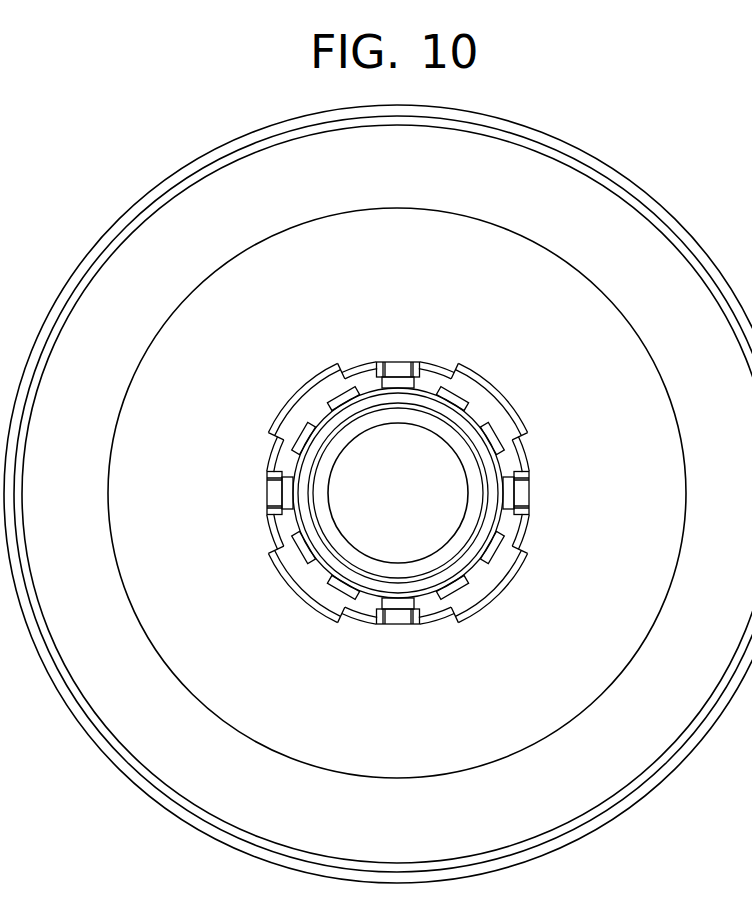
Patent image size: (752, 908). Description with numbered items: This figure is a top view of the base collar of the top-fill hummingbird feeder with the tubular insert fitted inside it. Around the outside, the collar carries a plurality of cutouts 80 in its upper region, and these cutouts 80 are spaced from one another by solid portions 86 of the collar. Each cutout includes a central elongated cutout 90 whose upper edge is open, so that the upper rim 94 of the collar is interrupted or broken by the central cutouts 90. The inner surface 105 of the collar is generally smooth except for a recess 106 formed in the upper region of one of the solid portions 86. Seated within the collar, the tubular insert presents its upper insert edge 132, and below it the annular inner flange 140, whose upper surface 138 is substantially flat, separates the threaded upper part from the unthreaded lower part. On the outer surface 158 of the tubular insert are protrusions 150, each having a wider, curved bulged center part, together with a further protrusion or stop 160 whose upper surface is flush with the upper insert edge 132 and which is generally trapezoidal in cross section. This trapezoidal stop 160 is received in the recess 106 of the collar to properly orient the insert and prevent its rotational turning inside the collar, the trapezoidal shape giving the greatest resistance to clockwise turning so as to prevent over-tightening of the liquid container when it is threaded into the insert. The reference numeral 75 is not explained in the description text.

The latch ring 75 is at (300, 386).
The cutouts 80 is at (380, 357).
The solid portions 86 is at (313, 378).
The central elongated cutout 90 is at (412, 635).
The upper rim 94 is at (266, 469).
The inner surface 105 is at (466, 603).
The recess 106 is at (484, 598).
The upper insert edge 132 is at (343, 594).
The upper surface 138 is at (462, 436).
The annular inner flange 140 is at (373, 561).
The protrusion 150 is at (403, 363).
The outer surface 158 is at (517, 536).
The stop 160 is at (481, 574).